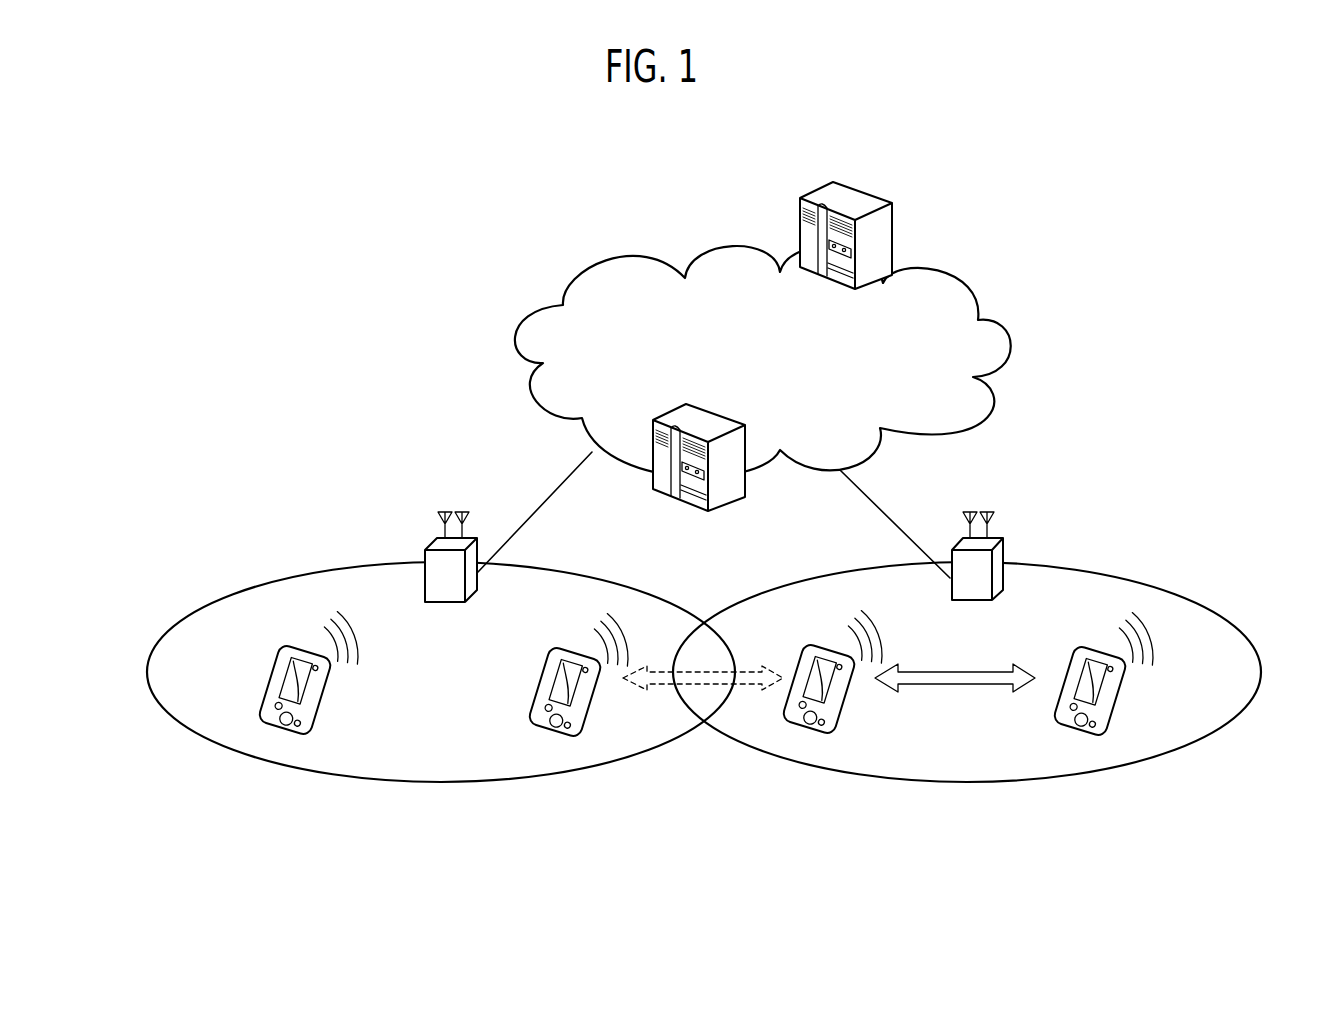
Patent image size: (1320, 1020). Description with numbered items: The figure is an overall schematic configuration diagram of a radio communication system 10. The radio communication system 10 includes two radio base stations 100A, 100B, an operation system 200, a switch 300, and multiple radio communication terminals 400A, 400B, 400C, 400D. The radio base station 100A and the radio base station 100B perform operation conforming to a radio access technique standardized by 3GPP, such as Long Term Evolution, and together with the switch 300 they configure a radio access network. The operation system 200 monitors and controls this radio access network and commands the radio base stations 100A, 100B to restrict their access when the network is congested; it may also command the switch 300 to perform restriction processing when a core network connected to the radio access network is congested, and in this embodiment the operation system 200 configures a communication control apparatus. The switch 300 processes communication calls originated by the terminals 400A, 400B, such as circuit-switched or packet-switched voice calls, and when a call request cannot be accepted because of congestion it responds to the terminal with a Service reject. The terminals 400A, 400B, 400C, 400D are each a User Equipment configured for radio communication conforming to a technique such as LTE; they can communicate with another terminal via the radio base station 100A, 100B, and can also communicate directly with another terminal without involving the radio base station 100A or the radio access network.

The radio communication system 10 is at (982, 135).
The radio base station 100A is at (430, 546).
The radio base station 100B is at (1007, 549).
The operation system 200 is at (872, 193).
The switch 300 is at (714, 412).
The radio communication terminal 400A is at (275, 675).
The radio communication terminal 400B is at (579, 648).
The radio communication terminal 400C is at (812, 645).
The radio communication terminal 400D is at (1115, 660).